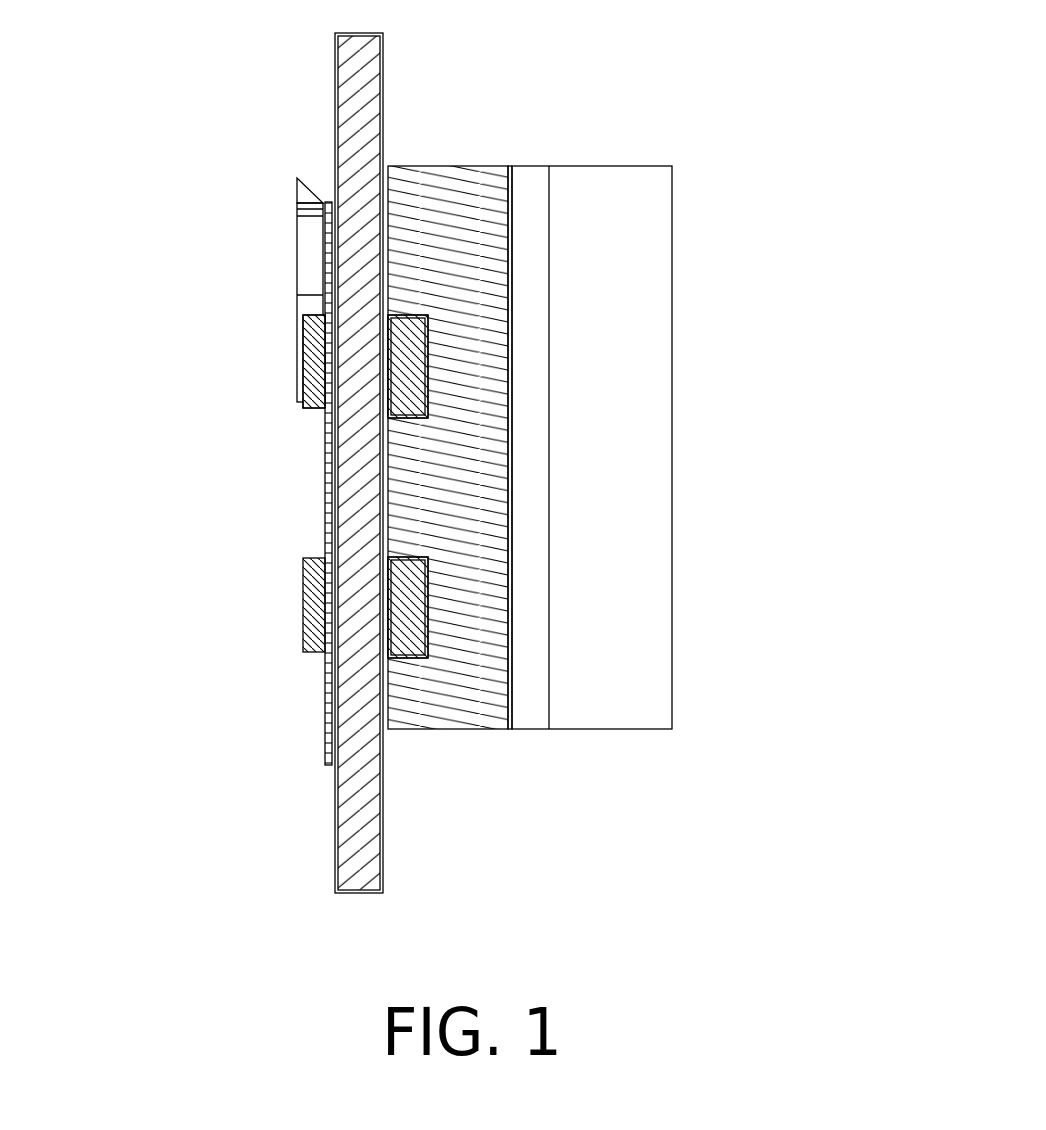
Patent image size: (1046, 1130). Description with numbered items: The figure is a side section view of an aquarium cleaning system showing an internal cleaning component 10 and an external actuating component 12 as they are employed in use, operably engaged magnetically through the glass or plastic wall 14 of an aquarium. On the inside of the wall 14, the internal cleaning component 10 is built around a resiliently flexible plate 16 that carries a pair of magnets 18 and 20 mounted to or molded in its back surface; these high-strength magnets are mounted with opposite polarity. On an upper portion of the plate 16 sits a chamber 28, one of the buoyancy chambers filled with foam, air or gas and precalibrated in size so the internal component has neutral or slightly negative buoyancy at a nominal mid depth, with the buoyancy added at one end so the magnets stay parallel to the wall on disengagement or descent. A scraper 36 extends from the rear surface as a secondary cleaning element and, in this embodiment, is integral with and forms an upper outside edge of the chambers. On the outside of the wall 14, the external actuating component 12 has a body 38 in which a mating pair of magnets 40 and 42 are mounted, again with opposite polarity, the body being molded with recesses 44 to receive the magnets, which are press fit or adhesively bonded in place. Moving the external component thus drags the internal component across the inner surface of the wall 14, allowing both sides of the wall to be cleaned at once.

The internal cleaning component 10 is at (266, 272).
The external actuating component 12 is at (692, 345).
The wall 14 is at (387, 826).
The resiliently flexible plate 16 is at (326, 765).
The magnet 18 is at (300, 608).
The magnet 20 is at (309, 368).
The chamber 28 is at (312, 247).
The scraper 36 is at (305, 190).
The body 38 is at (482, 165).
The magnet 40 is at (413, 607).
The magnet 42 is at (415, 365).
The recess 44 is at (410, 314).